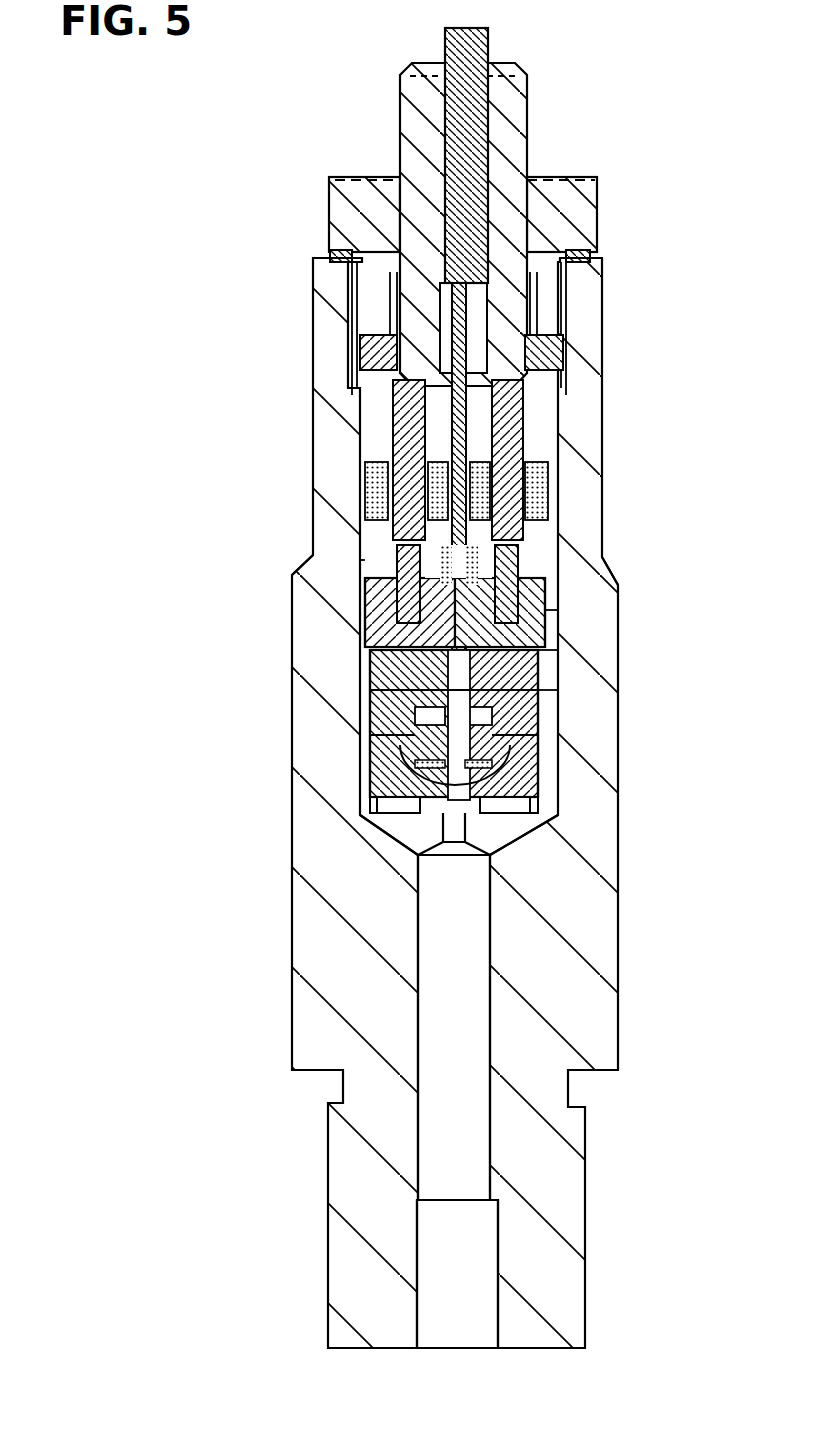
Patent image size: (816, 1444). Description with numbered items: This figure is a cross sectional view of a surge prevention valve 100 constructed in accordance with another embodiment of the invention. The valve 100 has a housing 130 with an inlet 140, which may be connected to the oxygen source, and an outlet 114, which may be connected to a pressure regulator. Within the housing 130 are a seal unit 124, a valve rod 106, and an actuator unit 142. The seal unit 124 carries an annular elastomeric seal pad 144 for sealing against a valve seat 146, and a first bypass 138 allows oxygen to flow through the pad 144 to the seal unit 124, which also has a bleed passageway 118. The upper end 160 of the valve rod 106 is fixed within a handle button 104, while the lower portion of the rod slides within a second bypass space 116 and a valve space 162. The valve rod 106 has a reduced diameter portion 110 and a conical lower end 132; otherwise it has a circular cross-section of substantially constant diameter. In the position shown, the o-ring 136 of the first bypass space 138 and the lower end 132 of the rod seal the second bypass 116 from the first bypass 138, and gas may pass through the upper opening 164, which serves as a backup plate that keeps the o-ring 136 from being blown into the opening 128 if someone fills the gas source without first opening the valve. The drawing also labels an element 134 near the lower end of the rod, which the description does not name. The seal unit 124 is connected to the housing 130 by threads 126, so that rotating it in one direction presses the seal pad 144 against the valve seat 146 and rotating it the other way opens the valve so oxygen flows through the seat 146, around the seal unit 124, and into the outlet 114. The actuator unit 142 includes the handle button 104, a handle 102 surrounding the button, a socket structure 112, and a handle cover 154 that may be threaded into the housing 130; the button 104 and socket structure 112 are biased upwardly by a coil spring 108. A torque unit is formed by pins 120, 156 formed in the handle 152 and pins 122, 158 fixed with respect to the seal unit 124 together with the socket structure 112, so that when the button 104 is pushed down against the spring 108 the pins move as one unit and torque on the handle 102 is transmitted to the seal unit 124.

The valve 100 is at (668, 437).
The handle 102 is at (513, 128).
The handle button 104 is at (528, 78).
The valve rod 106 is at (565, 346).
The coil spring 108 is at (365, 608).
The reduced diameter portion 110 is at (540, 690).
The socket structure 112 is at (525, 533).
The outlet 114 is at (328, 692).
The second bypass space 116 is at (375, 690).
The bleed passageway 118 is at (375, 732).
The pin 120 is at (548, 482).
The pin 122 is at (618, 580).
The seal unit 124 is at (560, 622).
The threads 126 is at (540, 760).
The opening 128 is at (465, 1164).
The housing 130 is at (580, 1026).
The conical lower end 132 is at (520, 812).
The valve ball 134 is at (535, 718).
The o-ring 136 is at (540, 800).
The first bypass 138 is at (468, 868).
The inlet 140 is at (462, 1312).
The actuator unit 142 is at (565, 212).
The seal pad 144 is at (440, 830).
The valve seat 146 is at (450, 840).
The handle 152 is at (562, 170).
The handle cover 154 is at (345, 206).
The pin 156 is at (370, 520).
The pin 158 is at (355, 572).
The upper end 160 is at (585, 279).
The valve space 162 is at (560, 652).
The upper opening 164 is at (372, 766).